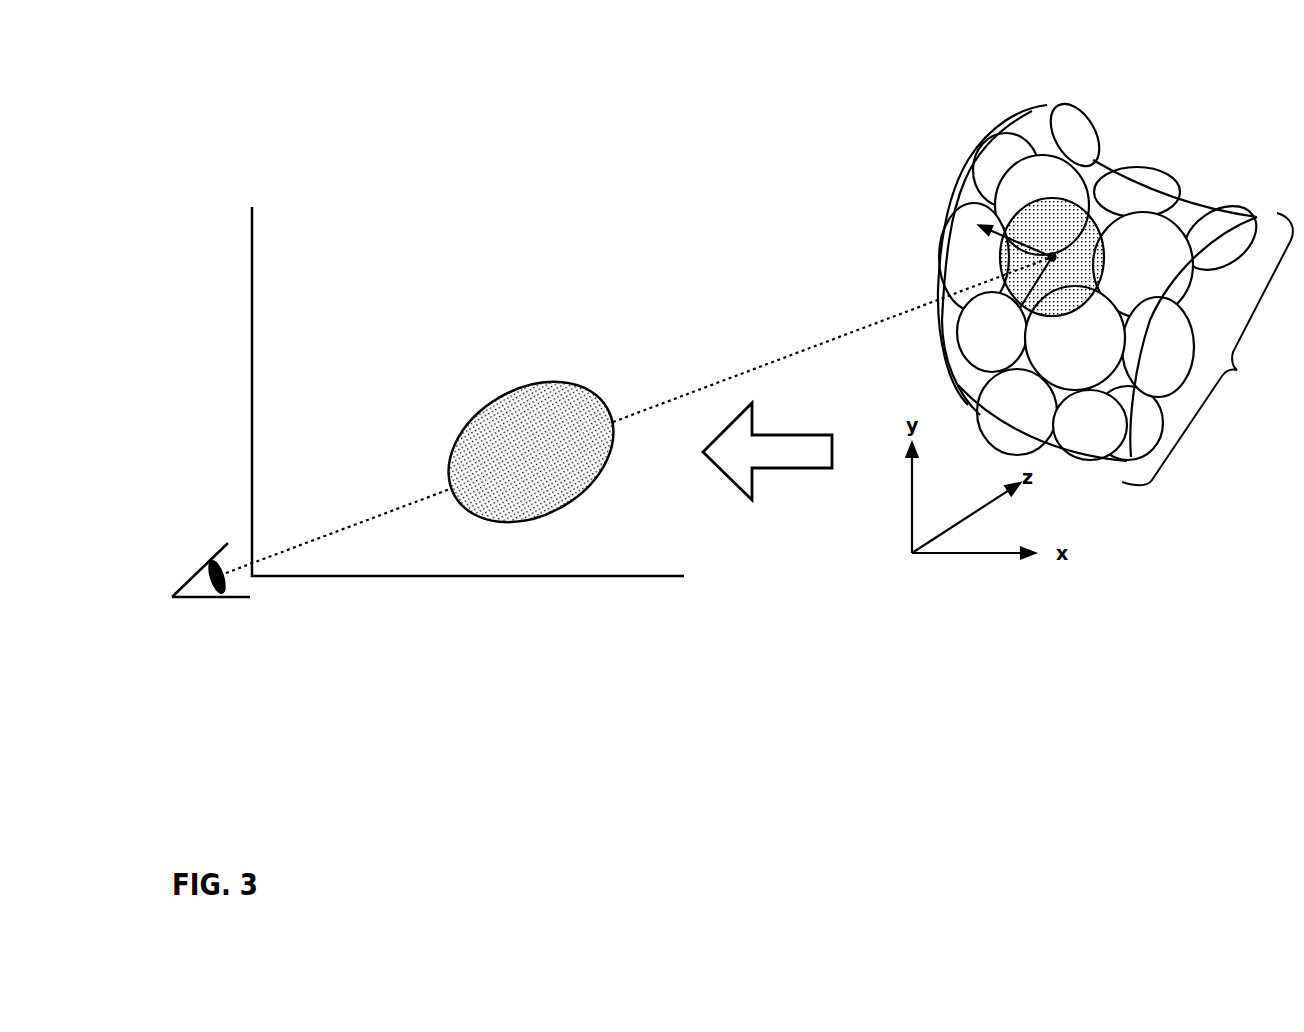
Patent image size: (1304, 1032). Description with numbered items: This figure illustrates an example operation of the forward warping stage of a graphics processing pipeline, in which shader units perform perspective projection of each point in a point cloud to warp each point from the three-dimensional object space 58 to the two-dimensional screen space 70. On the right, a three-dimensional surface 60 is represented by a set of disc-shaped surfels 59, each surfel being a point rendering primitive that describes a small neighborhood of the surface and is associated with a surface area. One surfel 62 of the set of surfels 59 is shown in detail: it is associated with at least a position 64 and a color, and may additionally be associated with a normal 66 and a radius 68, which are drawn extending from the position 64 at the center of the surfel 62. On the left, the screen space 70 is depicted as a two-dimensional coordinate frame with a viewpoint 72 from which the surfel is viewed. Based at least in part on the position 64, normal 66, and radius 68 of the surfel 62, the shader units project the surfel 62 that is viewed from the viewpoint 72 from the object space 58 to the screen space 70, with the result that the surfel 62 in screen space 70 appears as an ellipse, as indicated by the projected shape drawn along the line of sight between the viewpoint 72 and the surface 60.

The three-dimensional object space 58 is at (1080, 260).
The set of disc-shaped surfels 59 is at (1207, 349).
The three-dimensional surface 60 is at (1052, 445).
The surfel 62 is at (548, 380).
The position 64 is at (1053, 261).
The normal 66 is at (1037, 238).
The radius 68 is at (1042, 280).
The two-dimensional screen space 70 is at (299, 159).
The viewpoint 72 is at (203, 594).